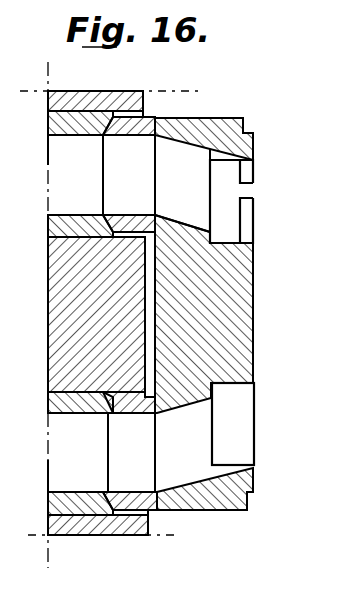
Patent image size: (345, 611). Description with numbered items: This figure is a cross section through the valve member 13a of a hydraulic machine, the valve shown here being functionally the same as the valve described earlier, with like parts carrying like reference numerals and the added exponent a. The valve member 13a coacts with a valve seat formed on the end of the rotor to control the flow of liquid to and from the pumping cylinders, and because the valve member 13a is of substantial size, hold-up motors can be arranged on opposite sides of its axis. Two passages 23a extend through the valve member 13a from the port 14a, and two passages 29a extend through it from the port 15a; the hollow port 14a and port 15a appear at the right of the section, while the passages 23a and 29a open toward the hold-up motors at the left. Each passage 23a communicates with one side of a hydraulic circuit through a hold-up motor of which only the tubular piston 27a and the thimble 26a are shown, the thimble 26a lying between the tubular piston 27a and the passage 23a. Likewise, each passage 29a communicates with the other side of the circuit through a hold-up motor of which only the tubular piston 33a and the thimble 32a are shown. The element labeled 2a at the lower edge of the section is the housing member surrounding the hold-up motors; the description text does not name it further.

The housing 2a is at (73, 536).
The valve member 13a is at (203, 131).
The port 14a is at (225, 192).
The port 15a is at (240, 413).
The passage 23a is at (182, 183).
The thimble 26a is at (129, 174).
The tubular piston 27a is at (80, 174).
The passage 29a is at (178, 451).
The thimble 32a is at (130, 451).
The tubular piston 33a is at (80, 453).